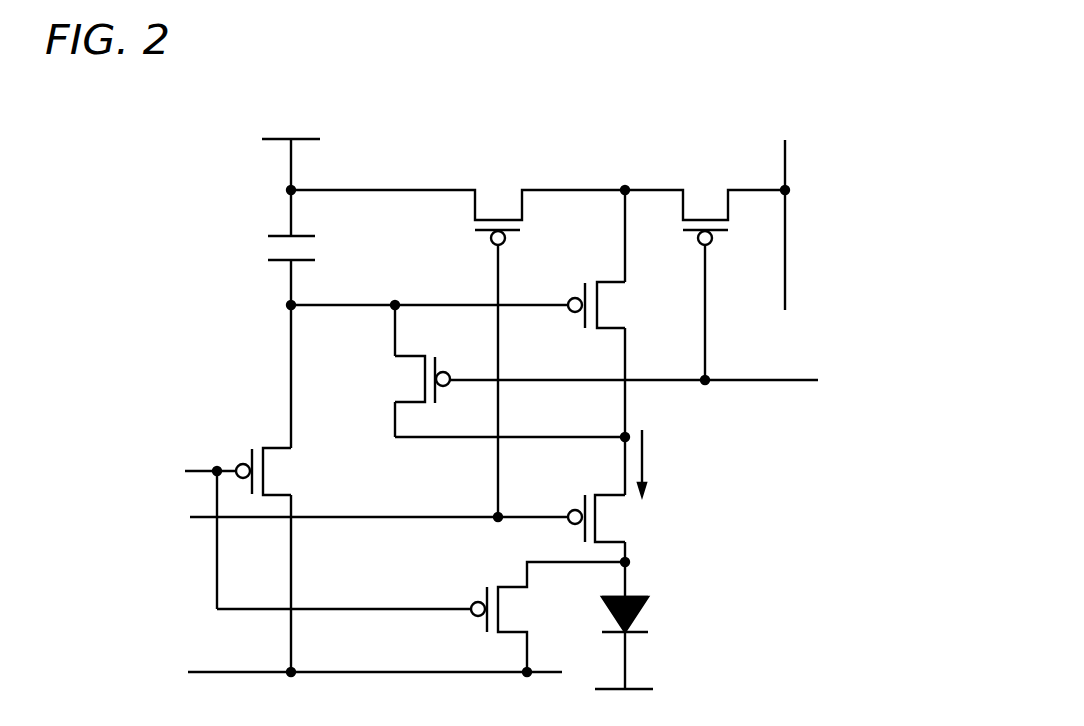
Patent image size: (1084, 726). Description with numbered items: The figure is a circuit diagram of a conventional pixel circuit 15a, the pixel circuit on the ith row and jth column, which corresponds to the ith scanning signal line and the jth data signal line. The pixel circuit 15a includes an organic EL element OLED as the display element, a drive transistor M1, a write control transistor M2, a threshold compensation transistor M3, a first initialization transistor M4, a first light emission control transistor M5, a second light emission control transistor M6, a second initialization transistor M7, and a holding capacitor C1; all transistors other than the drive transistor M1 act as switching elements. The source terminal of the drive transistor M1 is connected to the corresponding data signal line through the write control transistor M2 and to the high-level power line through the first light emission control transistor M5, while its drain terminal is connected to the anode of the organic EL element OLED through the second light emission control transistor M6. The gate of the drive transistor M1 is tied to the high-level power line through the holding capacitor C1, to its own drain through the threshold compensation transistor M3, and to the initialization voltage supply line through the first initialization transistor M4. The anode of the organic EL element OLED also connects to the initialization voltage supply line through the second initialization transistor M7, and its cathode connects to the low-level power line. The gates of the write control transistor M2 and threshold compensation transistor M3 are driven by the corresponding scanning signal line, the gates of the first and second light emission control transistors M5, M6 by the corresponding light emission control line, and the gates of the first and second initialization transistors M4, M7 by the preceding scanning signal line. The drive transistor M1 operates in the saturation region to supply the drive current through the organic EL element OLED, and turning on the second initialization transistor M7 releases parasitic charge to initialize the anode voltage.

The pixel circuit 15a is at (520, 142).
The holding capacitor C1 is at (268, 250).
The drive transistor M1 is at (591, 280).
The write control transistor M2 is at (734, 222).
The threshold compensation transistor M3 is at (427, 356).
The first initialization transistor M4 is at (258, 445).
The first light emission control transistor M5 is at (472, 228).
The second light emission control transistor M6 is at (593, 492).
The second initialization transistor M7 is at (492, 584).
The organic EL element OLED is at (650, 607).